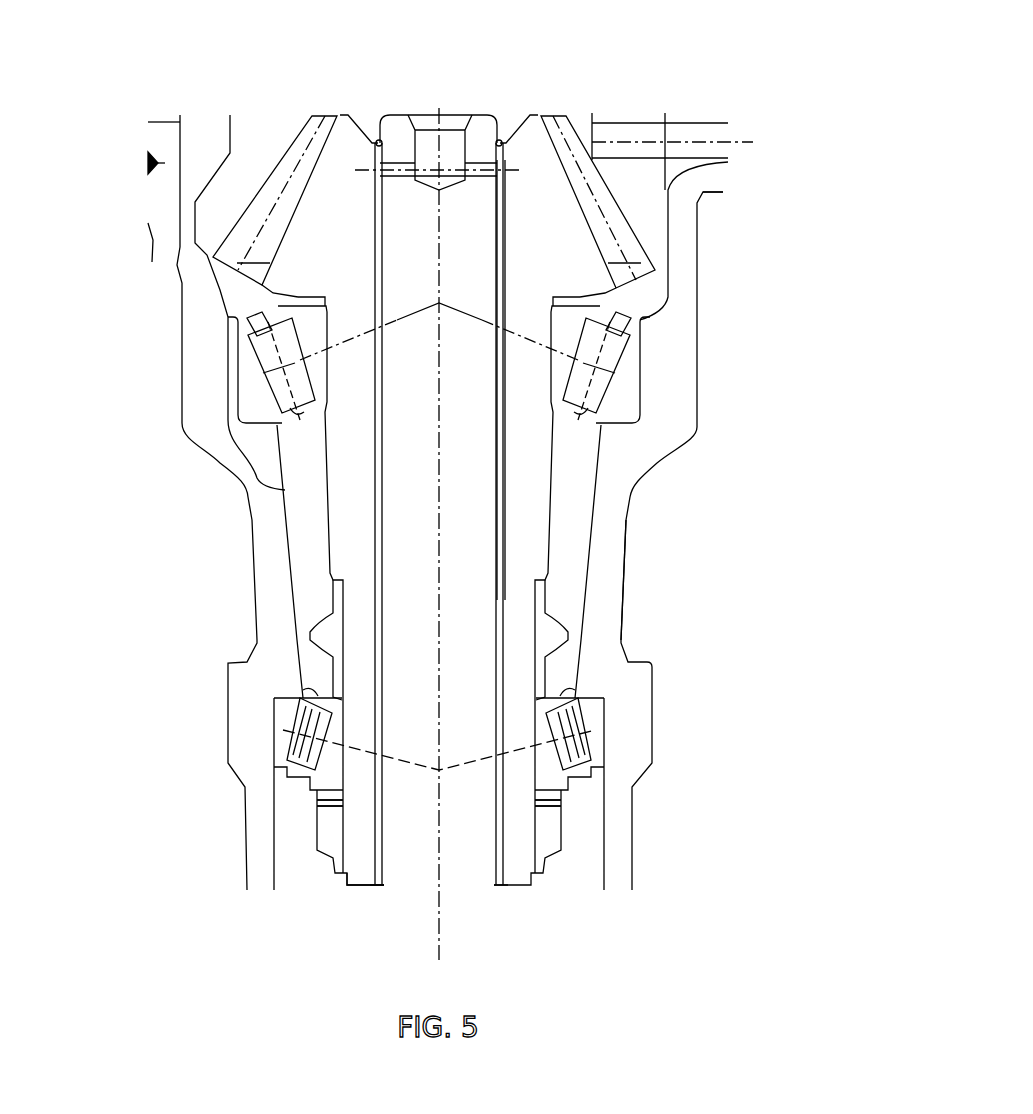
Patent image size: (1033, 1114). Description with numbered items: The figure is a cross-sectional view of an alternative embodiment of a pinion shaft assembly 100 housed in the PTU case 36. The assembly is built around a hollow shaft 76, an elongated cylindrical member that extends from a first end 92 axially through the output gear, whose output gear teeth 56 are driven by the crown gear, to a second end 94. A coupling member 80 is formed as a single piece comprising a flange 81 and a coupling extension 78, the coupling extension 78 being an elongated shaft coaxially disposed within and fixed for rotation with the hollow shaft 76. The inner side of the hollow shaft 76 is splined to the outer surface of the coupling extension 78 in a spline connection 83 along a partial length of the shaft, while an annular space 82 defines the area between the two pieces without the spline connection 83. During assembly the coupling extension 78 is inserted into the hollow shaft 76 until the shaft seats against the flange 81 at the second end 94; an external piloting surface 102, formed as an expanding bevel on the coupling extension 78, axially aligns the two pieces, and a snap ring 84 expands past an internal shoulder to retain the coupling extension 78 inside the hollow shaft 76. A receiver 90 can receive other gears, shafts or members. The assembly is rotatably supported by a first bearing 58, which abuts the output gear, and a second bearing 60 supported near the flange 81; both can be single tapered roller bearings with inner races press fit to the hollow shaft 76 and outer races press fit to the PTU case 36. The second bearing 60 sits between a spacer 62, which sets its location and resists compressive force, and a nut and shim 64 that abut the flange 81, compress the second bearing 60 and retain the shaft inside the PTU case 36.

The pinion shaft assembly 100 is at (672, 74).
The PTU case 36 is at (177, 260).
The output gear teeth 56 is at (540, 242).
The first bearing 58 is at (610, 345).
The second bearing 60 is at (537, 748).
The spacer 62 is at (313, 643).
The nut and shim 64 is at (557, 823).
The hollow shaft 76 is at (528, 525).
The coupling extension 78 is at (500, 568).
The coupling member 80 is at (413, 893).
The flange 81 is at (535, 905).
The annular space 82 is at (373, 497).
The spline connection 83 is at (373, 230).
The snap ring 84 is at (502, 140).
The receiver 90 is at (451, 120).
The first end 92 is at (385, 113).
The second end 94 is at (350, 890).
The external piloting surface 102 is at (380, 807).